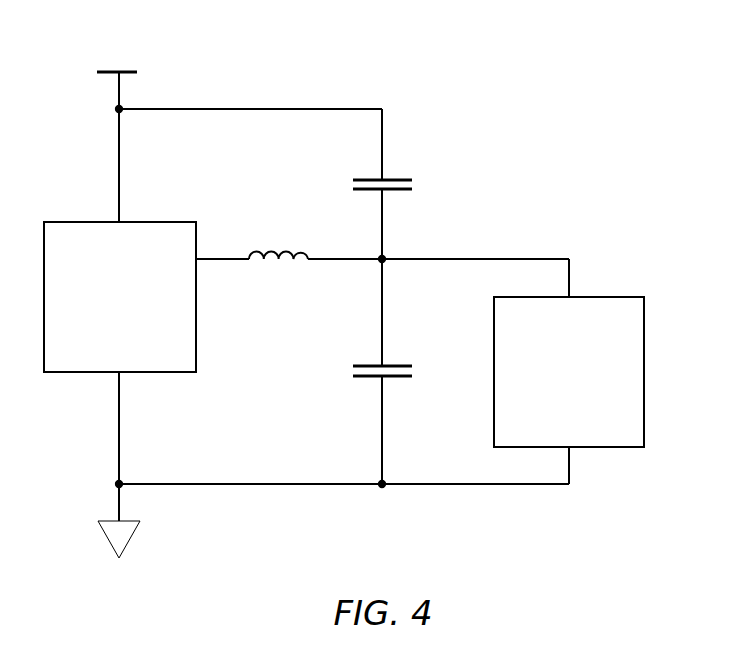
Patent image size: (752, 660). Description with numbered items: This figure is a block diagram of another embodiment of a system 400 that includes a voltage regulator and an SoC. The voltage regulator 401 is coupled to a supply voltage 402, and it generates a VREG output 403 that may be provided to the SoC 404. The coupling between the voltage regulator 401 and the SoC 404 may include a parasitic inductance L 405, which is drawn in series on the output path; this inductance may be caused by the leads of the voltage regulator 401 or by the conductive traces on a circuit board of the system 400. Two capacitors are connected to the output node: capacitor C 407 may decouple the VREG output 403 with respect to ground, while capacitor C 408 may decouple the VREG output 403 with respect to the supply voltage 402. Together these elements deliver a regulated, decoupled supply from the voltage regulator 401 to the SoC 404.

The system 400 is at (531, 97).
The voltage regulator 401 is at (104, 331).
The supply voltage 402 is at (102, 57).
The VREG output 403 is at (503, 258).
The SoC 404 is at (553, 398).
The parasitic inductance L 405 is at (260, 240).
The capacitor C 407 is at (310, 392).
The capacitor C 408 is at (417, 205).